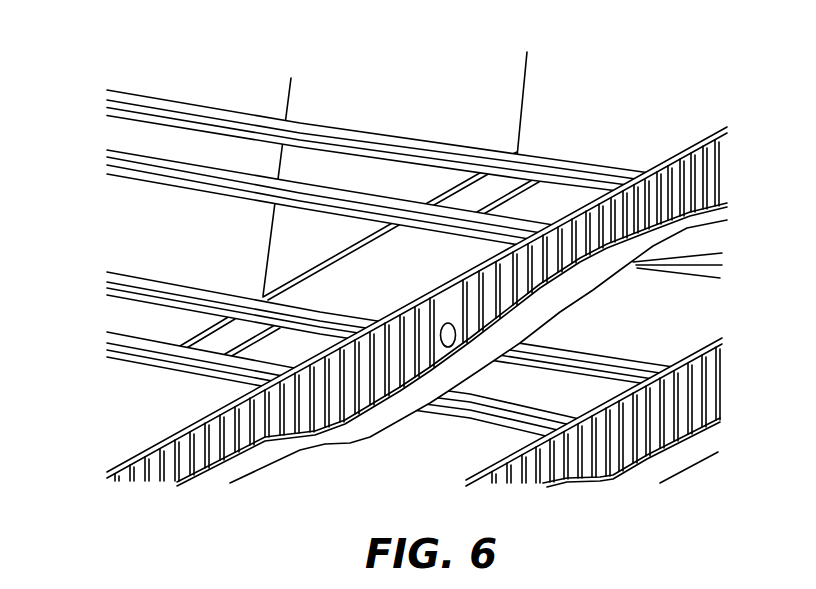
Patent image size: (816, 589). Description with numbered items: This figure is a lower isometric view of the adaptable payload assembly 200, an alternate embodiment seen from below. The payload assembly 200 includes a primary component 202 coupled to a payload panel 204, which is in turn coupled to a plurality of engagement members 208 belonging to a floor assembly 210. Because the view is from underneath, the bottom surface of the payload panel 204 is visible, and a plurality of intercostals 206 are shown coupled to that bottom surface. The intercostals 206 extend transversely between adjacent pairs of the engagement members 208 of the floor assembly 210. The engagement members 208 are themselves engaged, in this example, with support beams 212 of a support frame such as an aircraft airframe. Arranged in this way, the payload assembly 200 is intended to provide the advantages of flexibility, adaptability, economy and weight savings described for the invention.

The adaptable payload assembly 200 is at (178, 64).
The primary component 202 is at (488, 99).
The payload panel 204 is at (188, 340).
The intercostals 206 is at (535, 203).
The engagement members 208 is at (108, 157).
The floor assembly 210 is at (93, 226).
The support beams 212 is at (493, 467).